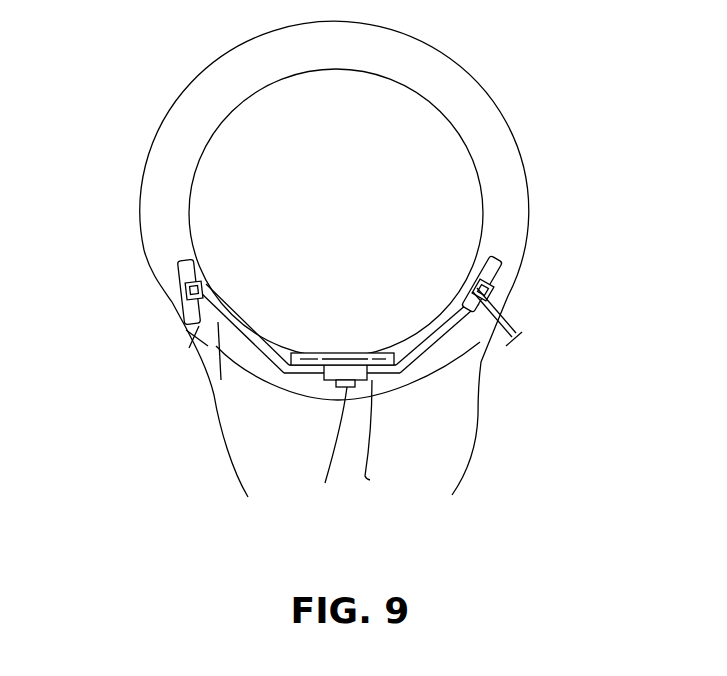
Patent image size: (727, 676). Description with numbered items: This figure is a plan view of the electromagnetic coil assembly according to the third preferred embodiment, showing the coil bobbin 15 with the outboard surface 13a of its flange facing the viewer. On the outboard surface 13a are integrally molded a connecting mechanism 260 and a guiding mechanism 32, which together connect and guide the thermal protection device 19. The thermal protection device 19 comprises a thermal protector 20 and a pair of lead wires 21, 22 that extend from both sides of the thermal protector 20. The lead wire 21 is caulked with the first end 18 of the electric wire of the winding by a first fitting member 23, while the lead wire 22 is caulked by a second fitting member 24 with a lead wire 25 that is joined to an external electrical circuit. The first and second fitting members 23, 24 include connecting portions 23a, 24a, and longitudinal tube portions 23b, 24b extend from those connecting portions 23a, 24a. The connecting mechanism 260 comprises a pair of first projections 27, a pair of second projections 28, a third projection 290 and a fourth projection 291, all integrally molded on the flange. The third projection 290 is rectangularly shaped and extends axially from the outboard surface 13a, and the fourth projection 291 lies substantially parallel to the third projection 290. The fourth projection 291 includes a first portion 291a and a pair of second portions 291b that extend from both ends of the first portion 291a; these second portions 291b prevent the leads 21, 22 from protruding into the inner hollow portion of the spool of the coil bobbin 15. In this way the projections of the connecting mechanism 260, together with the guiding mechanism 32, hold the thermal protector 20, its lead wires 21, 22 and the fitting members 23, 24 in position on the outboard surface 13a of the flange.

The coil bobbin 15 is at (471, 76).
The outboard surface 13a is at (506, 184).
The guiding mechanism 32 is at (356, 295).
The second portions 291b is at (287, 352).
The first portion 291a is at (345, 353).
The second fitting member 24 is at (551, 272).
The longitudinal tube portion 24b is at (500, 265).
The connecting portion 24a is at (498, 288).
The lead wire 25 is at (507, 331).
The first fitting member 23 is at (121, 291).
The longitudinal tube portion 23b is at (178, 269).
The connecting portion 23a is at (184, 291).
The first end of electric wire 18 is at (200, 331).
The thermal protection device 19 is at (339, 374).
The lead wire 21 is at (266, 353).
The thermal protector 20 is at (328, 381).
The lead wire 22 is at (441, 367).
The connecting mechanism 260 is at (326, 407).
The first projections 27 is at (211, 384).
The second projections 28 is at (461, 404).
The third projection 290 is at (322, 451).
The fourth projection 291 is at (373, 445).